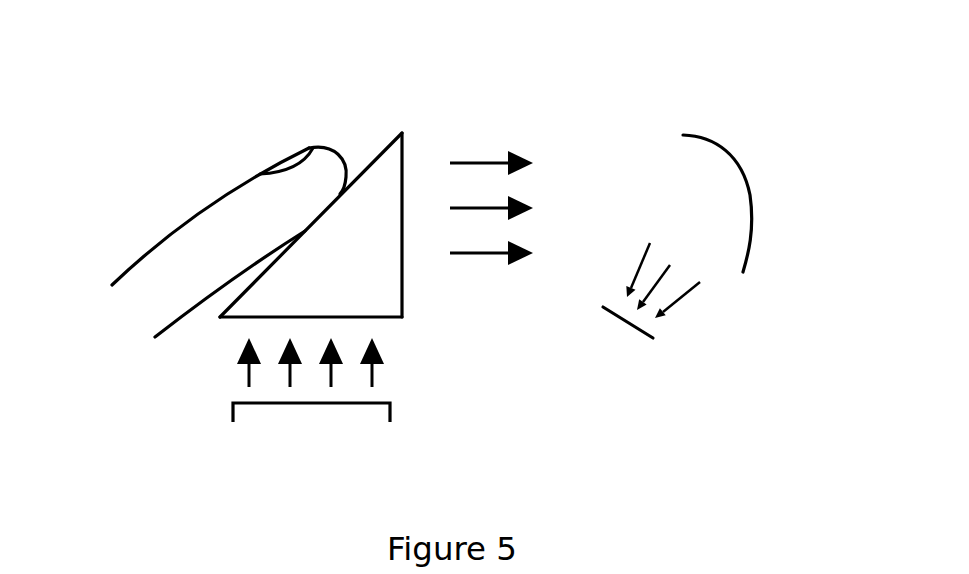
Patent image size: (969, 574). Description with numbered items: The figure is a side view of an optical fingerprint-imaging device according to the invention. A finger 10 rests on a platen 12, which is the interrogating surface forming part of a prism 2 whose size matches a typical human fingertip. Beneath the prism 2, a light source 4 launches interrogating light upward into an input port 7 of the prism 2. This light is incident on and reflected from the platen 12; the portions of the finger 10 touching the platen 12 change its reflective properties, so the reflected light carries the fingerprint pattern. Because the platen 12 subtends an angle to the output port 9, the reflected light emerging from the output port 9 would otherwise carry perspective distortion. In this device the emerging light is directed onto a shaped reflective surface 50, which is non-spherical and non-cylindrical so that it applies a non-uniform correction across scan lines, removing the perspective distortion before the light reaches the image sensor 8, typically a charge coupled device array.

The prism 2 is at (365, 194).
The platen 12 is at (363, 172).
The output port 9 is at (413, 267).
The input port 7 is at (382, 317).
The finger 10 is at (178, 232).
The light source 4 is at (390, 412).
The shaped reflective surface 50 is at (731, 133).
The image sensor 8 is at (668, 338).